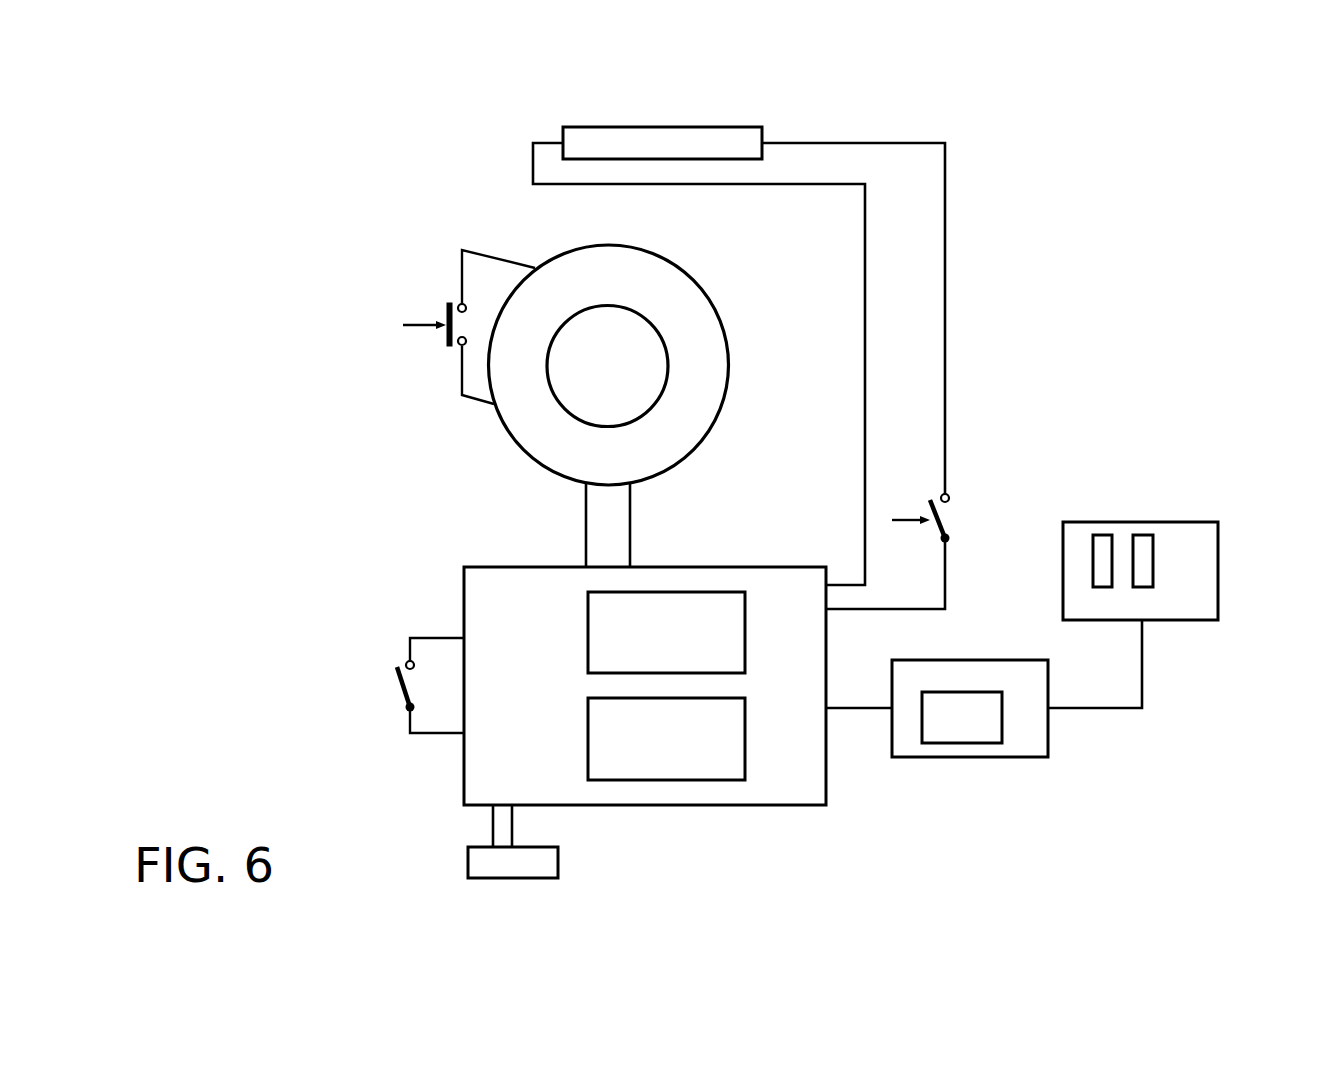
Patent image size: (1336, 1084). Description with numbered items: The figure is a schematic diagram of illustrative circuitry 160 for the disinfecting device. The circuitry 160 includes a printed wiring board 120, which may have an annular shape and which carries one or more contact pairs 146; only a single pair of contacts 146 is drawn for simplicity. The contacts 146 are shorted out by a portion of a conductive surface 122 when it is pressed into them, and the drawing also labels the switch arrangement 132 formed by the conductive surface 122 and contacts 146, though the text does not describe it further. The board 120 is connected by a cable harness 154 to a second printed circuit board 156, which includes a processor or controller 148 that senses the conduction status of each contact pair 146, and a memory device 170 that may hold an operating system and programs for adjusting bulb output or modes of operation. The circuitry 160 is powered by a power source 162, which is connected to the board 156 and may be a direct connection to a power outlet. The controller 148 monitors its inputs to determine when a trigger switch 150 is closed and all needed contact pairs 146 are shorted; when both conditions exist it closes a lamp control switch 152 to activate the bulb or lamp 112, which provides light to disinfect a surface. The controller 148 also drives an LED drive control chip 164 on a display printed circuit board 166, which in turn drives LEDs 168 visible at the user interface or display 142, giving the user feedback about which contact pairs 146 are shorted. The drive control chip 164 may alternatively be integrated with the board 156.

The bulb or lamp 112 is at (595, 127).
The printed wiring board 120 is at (703, 313).
The conductive surface 122 is at (446, 310).
The switch assembly 132 is at (410, 350).
The user interface or display 142 is at (1220, 570).
The contact pair 146 is at (462, 265).
The controller 148 is at (588, 632).
The trigger switch 150 is at (380, 705).
The lamp control switch 152 is at (967, 507).
The cable harness 154 is at (630, 537).
The second printed circuit board 156 is at (650, 805).
The circuitry 160 is at (215, 206).
The power source 162 is at (468, 863).
The LED drive control chip 164 is at (962, 743).
The display printed circuit board 166 is at (1048, 733).
The LEDs 168 is at (1143, 535).
The memory device 170 is at (588, 740).